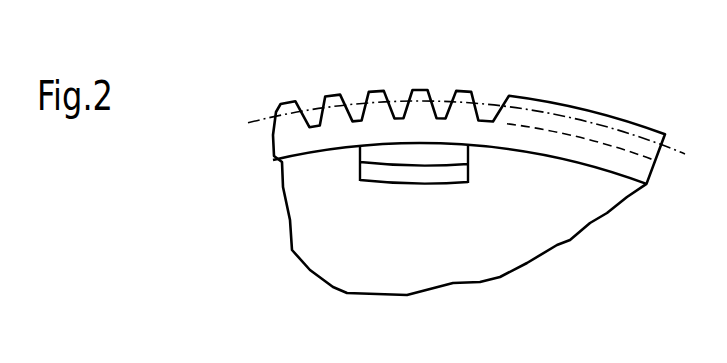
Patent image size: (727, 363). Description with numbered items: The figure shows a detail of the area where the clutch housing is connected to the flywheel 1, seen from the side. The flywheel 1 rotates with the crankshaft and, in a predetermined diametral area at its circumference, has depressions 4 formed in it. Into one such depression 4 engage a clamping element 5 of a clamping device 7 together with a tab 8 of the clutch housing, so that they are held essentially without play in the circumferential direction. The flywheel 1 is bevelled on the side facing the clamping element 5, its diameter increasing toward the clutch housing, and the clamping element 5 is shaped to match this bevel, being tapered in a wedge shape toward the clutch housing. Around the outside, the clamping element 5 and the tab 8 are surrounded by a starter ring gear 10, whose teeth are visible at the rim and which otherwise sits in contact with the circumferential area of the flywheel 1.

The flywheel 1 is at (293, 185).
The depressions 4 is at (367, 183).
The clamping element 5 is at (437, 173).
The clamping device 7 is at (447, 167).
The tab 8 is at (402, 153).
The starter ring gear 10 is at (328, 135).